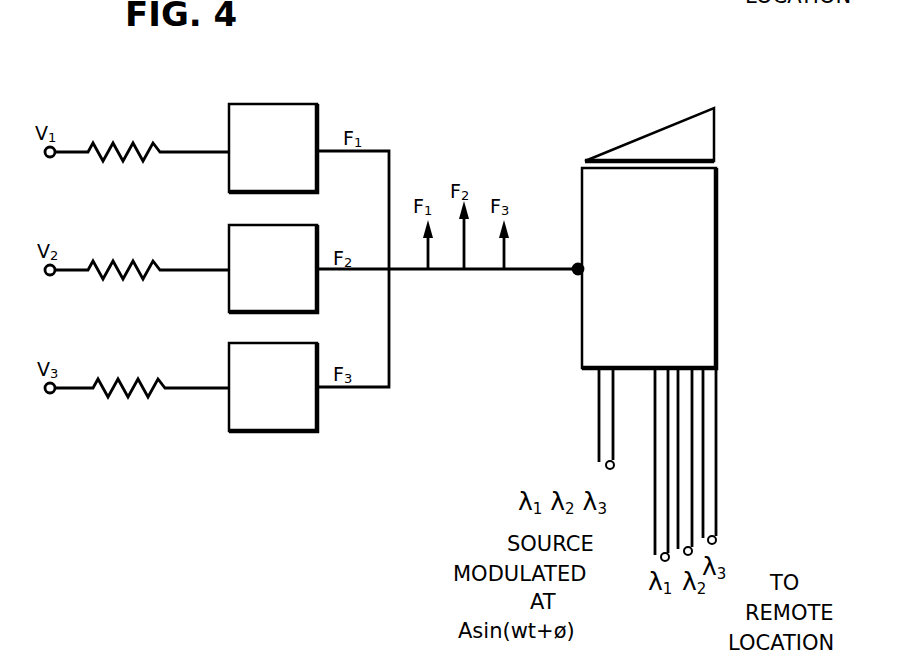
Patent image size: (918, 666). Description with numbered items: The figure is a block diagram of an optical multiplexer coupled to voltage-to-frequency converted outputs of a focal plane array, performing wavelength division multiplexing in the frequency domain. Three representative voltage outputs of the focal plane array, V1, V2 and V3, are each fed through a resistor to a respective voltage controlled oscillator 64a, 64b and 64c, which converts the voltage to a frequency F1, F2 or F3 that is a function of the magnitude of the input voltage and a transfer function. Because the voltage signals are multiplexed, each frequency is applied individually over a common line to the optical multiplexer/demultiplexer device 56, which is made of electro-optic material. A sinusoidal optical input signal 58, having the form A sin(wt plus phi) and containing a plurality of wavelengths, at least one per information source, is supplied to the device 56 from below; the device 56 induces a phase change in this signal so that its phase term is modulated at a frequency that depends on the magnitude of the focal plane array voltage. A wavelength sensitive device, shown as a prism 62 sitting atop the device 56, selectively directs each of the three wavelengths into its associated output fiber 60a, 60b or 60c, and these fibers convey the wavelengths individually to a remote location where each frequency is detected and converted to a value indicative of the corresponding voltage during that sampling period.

The optical multiplexer/demultiplexer device 56 is at (718, 325).
The sinusoidal optical input signal 58 is at (599, 418).
The output fiber 60a is at (668, 416).
The output fiber 60b is at (692, 458).
The output fiber 60c is at (716, 504).
The prism 62 is at (625, 147).
The voltage controlled oscillator 64a is at (229, 113).
The voltage controlled oscillator 64b is at (229, 234).
The voltage controlled oscillator 64c is at (229, 352).